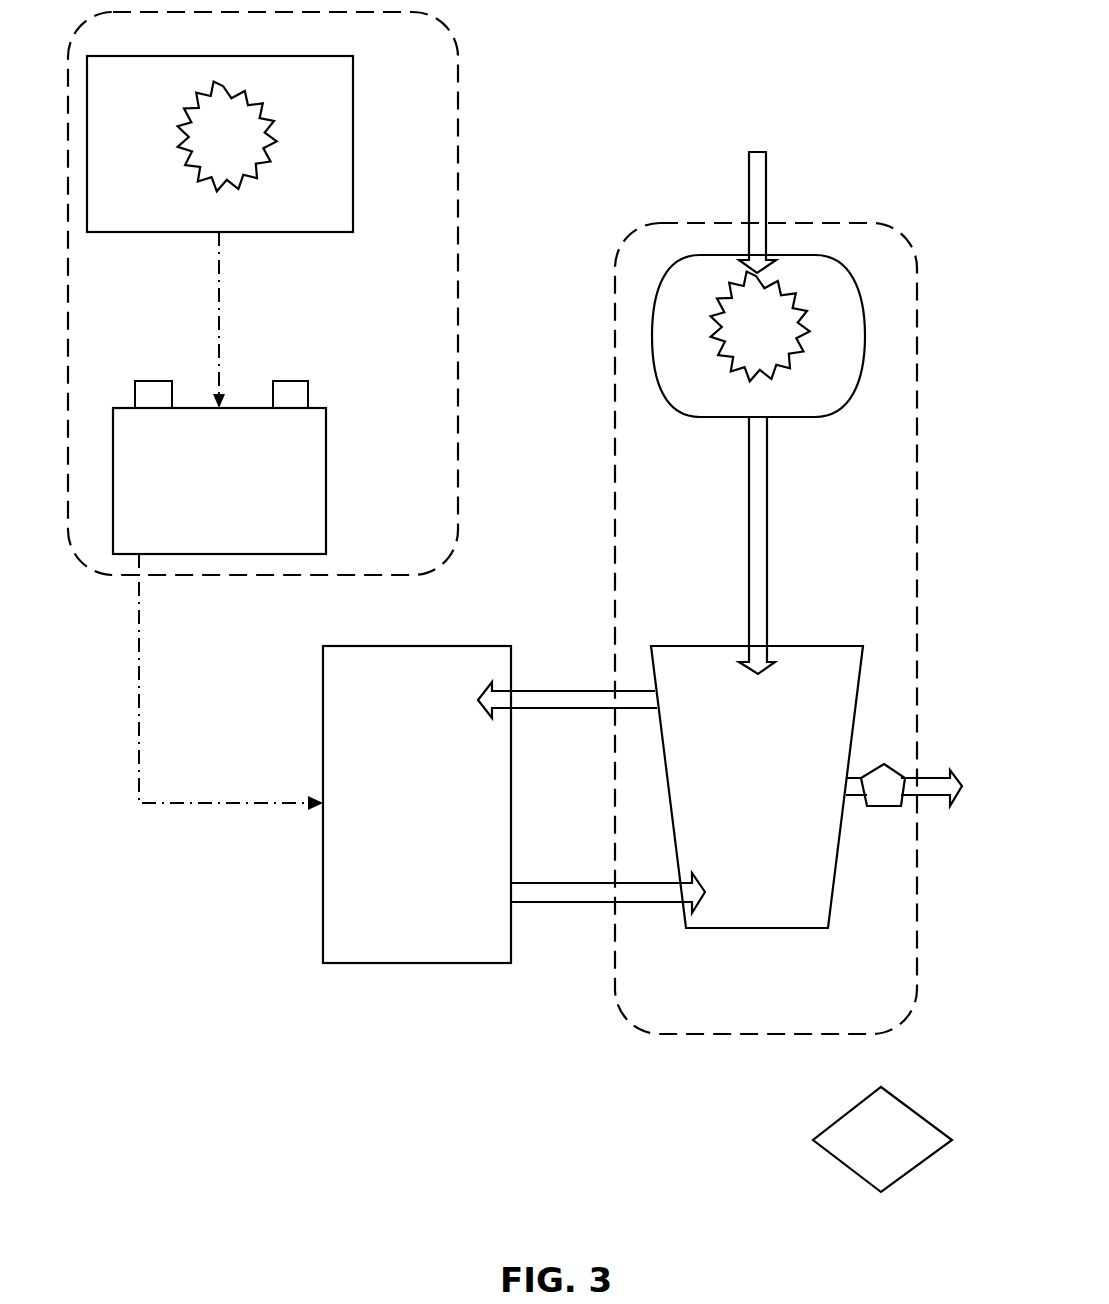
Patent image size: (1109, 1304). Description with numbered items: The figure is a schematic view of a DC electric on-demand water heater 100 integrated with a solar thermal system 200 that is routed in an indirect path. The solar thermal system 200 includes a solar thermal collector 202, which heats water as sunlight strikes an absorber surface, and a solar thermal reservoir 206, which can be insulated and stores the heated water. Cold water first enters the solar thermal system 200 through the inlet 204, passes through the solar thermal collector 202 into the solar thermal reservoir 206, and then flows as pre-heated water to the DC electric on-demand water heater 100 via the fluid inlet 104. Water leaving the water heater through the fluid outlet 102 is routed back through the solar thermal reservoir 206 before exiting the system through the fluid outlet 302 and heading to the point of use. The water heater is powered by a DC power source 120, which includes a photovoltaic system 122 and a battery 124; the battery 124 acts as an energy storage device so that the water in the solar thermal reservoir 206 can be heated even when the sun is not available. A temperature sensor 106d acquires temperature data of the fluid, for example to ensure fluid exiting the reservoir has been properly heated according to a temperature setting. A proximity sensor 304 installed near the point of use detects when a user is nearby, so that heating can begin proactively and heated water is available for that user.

The DC electric on-demand water heater 100 is at (323, 700).
The fluid outlet 102 is at (550, 903).
The fluid inlet 104 is at (535, 689).
The temperature sensor 106d is at (884, 806).
The DC power source 120 is at (458, 218).
The photovoltaic system 122 is at (353, 150).
The battery 124 is at (326, 432).
The solar thermal system 200 is at (877, 222).
The solar thermal collector 202 is at (652, 353).
The inlet 204 is at (760, 142).
The solar thermal reservoir 206 is at (756, 928).
The fluid outlet 302 is at (958, 788).
The proximity sensor 304 is at (813, 1140).